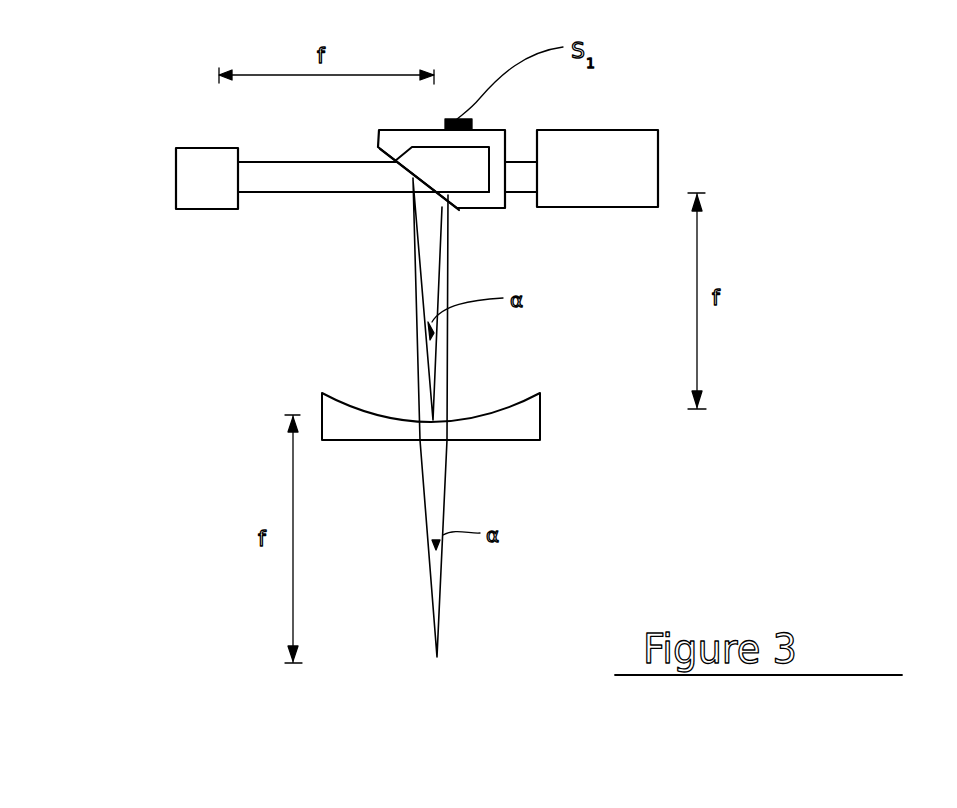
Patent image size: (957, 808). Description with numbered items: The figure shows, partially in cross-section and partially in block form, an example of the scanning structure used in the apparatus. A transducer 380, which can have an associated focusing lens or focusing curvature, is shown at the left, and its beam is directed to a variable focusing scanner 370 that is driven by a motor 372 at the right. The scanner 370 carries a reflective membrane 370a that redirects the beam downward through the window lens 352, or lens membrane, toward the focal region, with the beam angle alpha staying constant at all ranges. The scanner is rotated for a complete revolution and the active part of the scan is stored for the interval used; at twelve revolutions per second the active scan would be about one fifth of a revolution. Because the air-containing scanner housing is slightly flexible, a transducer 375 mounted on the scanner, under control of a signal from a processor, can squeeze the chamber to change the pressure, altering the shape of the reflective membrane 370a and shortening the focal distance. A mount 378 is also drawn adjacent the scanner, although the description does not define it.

The transducer 380 is at (195, 158).
The motor 372 is at (635, 142).
The variable focusing scanner 370 is at (384, 124).
The reflective membrane 370a is at (403, 172).
The transducer 375 is at (473, 122).
The mirror mount 378 is at (477, 202).
The window lens 352 is at (533, 417).